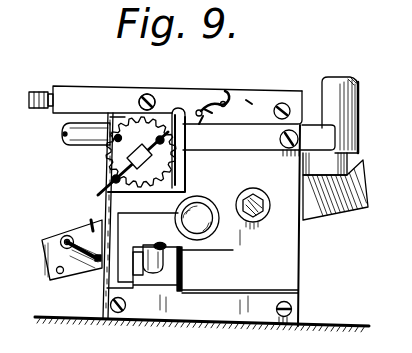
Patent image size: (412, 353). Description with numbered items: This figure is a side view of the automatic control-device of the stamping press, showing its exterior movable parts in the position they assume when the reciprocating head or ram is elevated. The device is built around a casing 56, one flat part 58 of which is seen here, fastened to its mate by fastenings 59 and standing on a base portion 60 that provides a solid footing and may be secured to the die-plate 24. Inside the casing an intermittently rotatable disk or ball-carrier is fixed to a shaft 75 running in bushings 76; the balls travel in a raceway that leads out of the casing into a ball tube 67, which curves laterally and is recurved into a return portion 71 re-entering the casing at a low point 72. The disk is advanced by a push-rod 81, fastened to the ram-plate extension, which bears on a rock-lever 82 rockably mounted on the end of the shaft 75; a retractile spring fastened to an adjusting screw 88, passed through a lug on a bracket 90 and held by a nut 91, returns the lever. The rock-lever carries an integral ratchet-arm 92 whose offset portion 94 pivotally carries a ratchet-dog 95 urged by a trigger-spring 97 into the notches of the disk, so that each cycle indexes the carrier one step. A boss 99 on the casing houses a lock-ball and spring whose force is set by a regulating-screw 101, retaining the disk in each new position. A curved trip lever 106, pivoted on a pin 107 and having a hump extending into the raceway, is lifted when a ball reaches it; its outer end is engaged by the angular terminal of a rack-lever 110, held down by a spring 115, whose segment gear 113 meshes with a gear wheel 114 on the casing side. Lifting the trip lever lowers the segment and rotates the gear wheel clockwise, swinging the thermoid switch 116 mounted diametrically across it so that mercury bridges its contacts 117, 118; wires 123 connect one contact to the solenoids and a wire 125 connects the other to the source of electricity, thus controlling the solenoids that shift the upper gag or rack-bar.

The die-plate 24 is at (340, 318).
The casing 56 is at (296, 246).
The casing part 58 is at (266, 270).
The fastening 59 is at (283, 103).
The base portion 60 is at (243, 310).
The ball tube 67 is at (72, 146).
The return portion 71 is at (145, 260).
The entry point 72 is at (182, 266).
The shaft 75 is at (212, 225).
The bushing 76 is at (208, 201).
The push-rod 81 is at (340, 112).
The rock-lever 82 is at (335, 202).
The adjusting screw 88 is at (37, 92).
The bracket 90 is at (84, 97).
The nut 91 is at (50, 108).
The ratchet-arm 92 is at (91, 220).
The offset portion 94 is at (82, 274).
The ratchet-dog 95 is at (65, 236).
The trigger-spring 97 is at (56, 260).
The boss 99 is at (258, 192).
The regulating-screw 101 is at (277, 258).
The trip lever 106 is at (330, 167).
The pivot 107 is at (225, 80).
The rack-lever 110 is at (224, 119).
The segment gear 113 is at (222, 167).
The gear wheel 114 is at (153, 215).
The spring 115 is at (245, 98).
The thermoid switch 116 is at (106, 176).
The contact 117 is at (103, 192).
The contact 118 is at (188, 136).
The wires 123 is at (117, 145).
The wire 125 is at (158, 140).